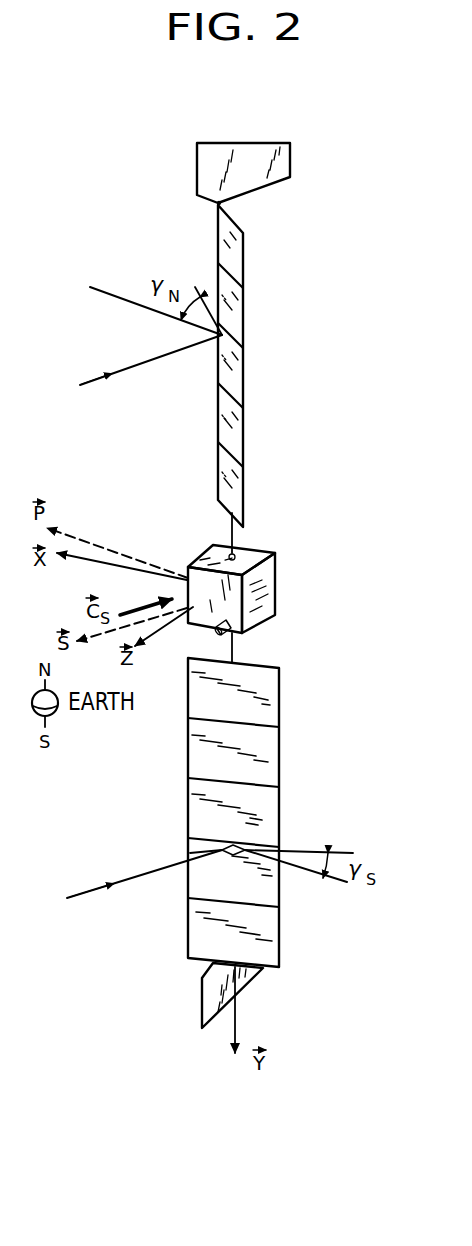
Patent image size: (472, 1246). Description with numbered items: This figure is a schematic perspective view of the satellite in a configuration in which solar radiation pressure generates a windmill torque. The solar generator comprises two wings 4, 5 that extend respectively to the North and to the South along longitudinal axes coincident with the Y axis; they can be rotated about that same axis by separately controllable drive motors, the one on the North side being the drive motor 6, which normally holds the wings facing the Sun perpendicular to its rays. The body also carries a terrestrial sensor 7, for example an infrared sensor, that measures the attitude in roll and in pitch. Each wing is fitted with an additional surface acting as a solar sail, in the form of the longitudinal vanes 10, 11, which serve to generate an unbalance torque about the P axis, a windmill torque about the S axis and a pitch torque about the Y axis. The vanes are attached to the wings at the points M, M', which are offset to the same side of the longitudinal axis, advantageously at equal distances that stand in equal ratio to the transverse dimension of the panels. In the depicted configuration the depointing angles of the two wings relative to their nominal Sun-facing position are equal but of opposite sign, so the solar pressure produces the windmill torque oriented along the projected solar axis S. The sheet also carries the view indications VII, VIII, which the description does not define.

The wing 4 is at (243, 422).
The wing 5 is at (279, 740).
The drive motor 6 is at (240, 557).
The terrestrial sensor 7 is at (233, 637).
The longitudinal vane 10 is at (290, 162).
The longitudinal vane 11 is at (248, 968).
The attachment point M is at (255, 222).
The attachment point M' is at (180, 989).
The view direction arrow VII is at (268, 253).
The view direction arrow VIII is at (285, 82).